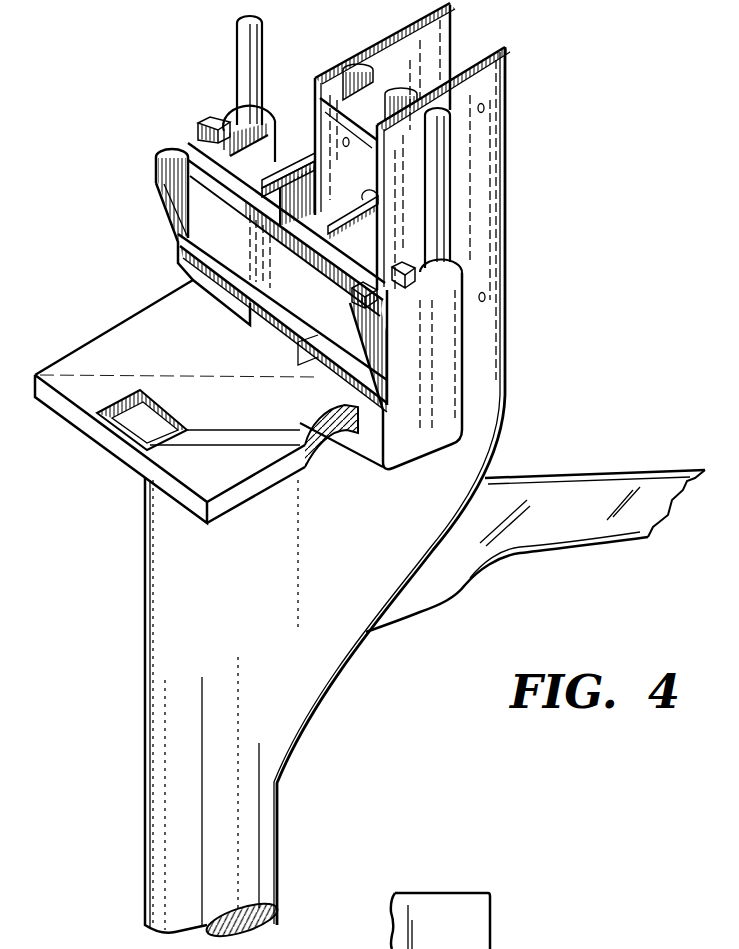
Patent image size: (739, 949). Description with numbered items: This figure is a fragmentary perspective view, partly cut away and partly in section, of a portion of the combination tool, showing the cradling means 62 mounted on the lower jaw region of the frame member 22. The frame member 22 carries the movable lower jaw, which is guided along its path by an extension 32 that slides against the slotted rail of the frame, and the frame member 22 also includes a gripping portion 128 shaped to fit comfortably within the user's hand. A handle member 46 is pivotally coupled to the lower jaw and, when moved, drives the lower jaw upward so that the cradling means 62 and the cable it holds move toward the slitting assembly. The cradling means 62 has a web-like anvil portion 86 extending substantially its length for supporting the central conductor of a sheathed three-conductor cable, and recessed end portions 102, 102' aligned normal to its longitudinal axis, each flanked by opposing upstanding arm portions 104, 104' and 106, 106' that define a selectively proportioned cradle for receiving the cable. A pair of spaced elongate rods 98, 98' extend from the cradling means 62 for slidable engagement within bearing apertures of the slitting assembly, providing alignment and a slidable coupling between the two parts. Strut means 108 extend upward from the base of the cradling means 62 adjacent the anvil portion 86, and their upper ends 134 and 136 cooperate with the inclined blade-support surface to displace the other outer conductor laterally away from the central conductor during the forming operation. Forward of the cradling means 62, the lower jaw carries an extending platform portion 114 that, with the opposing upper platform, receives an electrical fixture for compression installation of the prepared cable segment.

The frame member 22 is at (518, 372).
The extension 32 is at (308, 98).
The handle member 46 is at (596, 464).
The cradling means 62 is at (163, 222).
The anvil portion 86 is at (240, 236).
The elongate rod 98 is at (274, 70).
The elongate rod 98' is at (486, 188).
The recessed end portion 102 is at (201, 128).
The recessed end portion 102' is at (381, 365).
The upstanding arm portion 104 is at (134, 191).
The upstanding arm portion 104' is at (209, 103).
The upstanding arm portion 106 is at (282, 323).
The upstanding arm portion 106' is at (495, 273).
The strut means 108 is at (308, 154).
The extending platform portion 114 is at (242, 452).
The gripping portion 128 is at (257, 825).
The upper end of strut means 134 is at (320, 160).
The upper end of strut means 136 is at (381, 207).